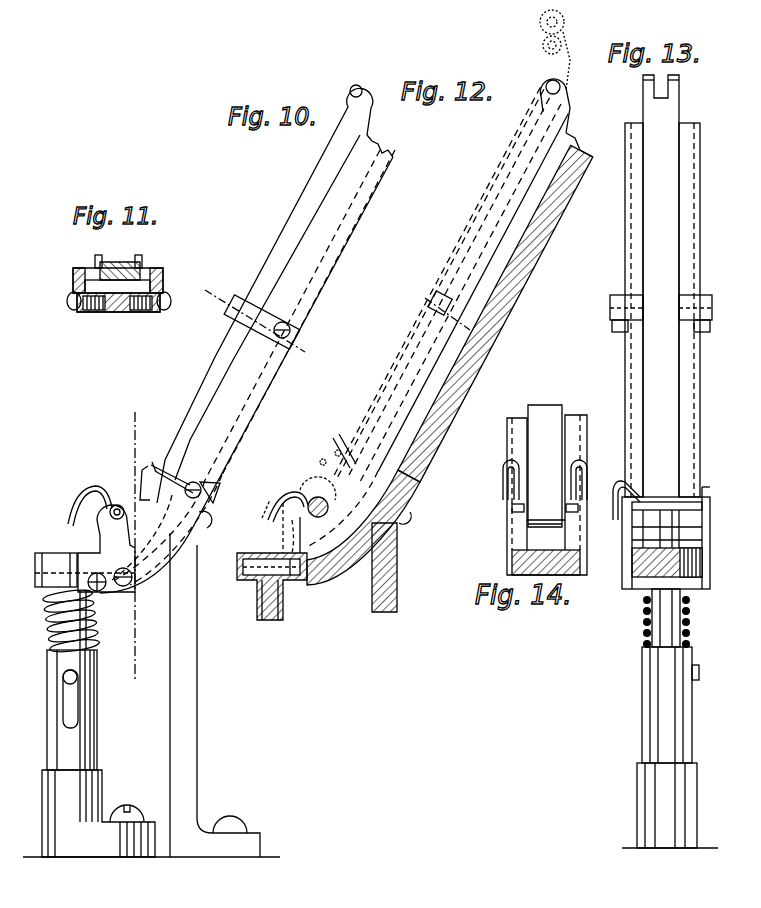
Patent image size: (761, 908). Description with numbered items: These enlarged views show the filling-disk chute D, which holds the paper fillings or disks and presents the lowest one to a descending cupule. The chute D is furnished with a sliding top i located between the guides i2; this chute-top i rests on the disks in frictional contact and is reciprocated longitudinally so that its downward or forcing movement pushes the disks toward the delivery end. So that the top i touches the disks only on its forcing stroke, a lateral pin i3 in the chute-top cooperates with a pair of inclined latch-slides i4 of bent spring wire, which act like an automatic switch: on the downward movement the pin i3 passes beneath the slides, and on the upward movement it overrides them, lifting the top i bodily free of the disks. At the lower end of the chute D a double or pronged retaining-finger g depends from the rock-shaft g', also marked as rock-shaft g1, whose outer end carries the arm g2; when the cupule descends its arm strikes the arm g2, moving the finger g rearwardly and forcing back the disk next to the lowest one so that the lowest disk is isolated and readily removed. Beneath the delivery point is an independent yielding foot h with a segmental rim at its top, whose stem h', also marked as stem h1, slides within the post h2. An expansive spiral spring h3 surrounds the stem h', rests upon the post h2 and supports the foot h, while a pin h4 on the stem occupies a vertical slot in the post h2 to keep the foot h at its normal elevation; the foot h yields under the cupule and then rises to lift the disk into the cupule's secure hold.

In FIG. 10, the filling-disk chute D is at (246, 340).
In FIG. 11, the filling-disk chute D is at (232, 300).
In FIG. 12, the filling-disk chute D is at (450, 372).
In FIG. 13, the filling-disk chute D is at (671, 310).
In FIG. 10, the sliding chute-top i is at (255, 335).
In FIG. 11, the sliding chute-top i is at (120, 260).
In FIG. 12, the sliding chute-top i is at (439, 279).
In FIG. 13, the sliding chute-top i is at (661, 311).
In FIG. 14, the sliding chute-top i is at (545, 466).
In FIG. 10, the guides i2 is at (255, 318).
In FIG. 11, the guides i2 is at (95, 262).
In FIG. 12, the guides i2 is at (440, 305).
In FIG. 13, the guides i2 is at (610, 304).
In FIG. 10, the lateral pin i3 is at (136, 498).
In FIG. 14, the lateral pin i3 is at (512, 508).
In FIG. 10, the inclined latch-slides i4 is at (153, 465).
In FIG. 12, the inclined latch-slides i4 is at (345, 455).
In FIG. 14, the inclined latch-slides i4 is at (503, 480).
In FIG. 12, the retaining-finger g is at (290, 528).
In FIG. 13, the retaining-finger g is at (668, 532).
In FIG. 10, the rock-shaft g' is at (106, 546).
In FIG. 12, the rock-shaft g' is at (318, 491).
In FIG. 13, the rock-shaft g' is at (666, 534).
In FIG. 10, the pivot bracket g1 is at (106, 546).
In FIG. 12, the pivot bracket g1 is at (318, 491).
In FIG. 13, the pivot bracket g1 is at (666, 534).
In FIG. 10, the arm g2 is at (80, 506).
In FIG. 12, the arm g2 is at (282, 500).
In FIG. 13, the arm g2 is at (615, 500).
In FIG. 10, the yielding foot h is at (75, 570).
In FIG. 12, the yielding foot h is at (261, 586).
In FIG. 13, the yielding foot h is at (667, 562).
In FIG. 10, the stem h' is at (61, 621).
In FIG. 12, the stem h' is at (281, 600).
In FIG. 13, the stem h' is at (666, 618).
In FIG. 10, the spring h1 is at (48, 608).
In FIG. 12, the spring h1 is at (281, 600).
In FIG. 13, the spring h1 is at (666, 618).
In FIG. 10, the post h2 is at (72, 710).
In FIG. 13, the post h2 is at (667, 705).
In FIG. 10, the expansive spiral spring h3 is at (90, 628).
In FIG. 13, the expansive spiral spring h3 is at (690, 612).
In FIG. 10, the pin h4 is at (63, 677).
In FIG. 13, the pin h4 is at (699, 672).